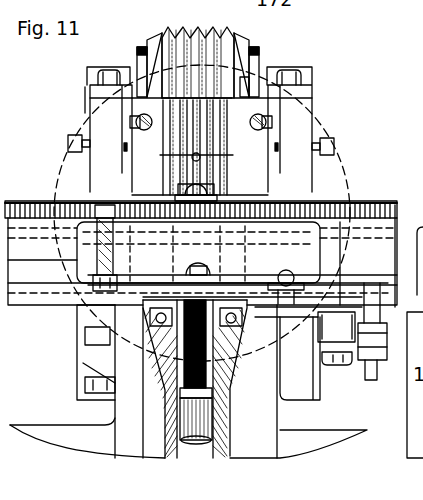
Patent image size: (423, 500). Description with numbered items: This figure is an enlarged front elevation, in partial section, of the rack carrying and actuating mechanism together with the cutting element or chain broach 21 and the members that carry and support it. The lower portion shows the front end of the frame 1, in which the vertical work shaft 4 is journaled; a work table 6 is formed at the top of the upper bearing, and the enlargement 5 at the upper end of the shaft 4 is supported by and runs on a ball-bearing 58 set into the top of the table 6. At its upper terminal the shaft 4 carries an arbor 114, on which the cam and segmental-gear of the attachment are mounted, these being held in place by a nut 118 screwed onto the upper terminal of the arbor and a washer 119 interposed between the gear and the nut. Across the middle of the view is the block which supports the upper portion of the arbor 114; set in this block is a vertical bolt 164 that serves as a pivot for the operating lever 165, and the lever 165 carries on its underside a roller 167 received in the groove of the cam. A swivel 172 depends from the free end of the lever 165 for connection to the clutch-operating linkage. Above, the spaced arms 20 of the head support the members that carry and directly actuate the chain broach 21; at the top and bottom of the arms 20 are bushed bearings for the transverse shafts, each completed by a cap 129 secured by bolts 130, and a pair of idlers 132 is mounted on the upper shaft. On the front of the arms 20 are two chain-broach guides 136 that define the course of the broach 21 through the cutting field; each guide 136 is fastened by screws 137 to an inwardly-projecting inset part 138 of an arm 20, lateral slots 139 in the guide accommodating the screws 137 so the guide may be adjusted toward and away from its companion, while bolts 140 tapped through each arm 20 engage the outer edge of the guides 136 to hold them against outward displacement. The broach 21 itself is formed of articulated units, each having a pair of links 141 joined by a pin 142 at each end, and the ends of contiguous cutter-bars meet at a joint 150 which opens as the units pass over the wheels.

The frame 1 is at (76, 435).
The work shaft 4 is at (200, 426).
The enlargement 5 is at (160, 348).
The work table 6 is at (90, 311).
The arms 20 is at (201, 198).
The chain broach 21 is at (198, 53).
The ball-bearing 58 is at (247, 352).
The arbor 114 is at (190, 372).
The nut 118 is at (205, 190).
The washer 119 is at (178, 155).
The cap 129 is at (120, 72).
The bolts 130 is at (110, 80).
The idlers 132 is at (143, 54).
The chain-broach guides 136 is at (199, 191).
The screws 137 is at (130, 118).
The inset part 138 is at (88, 170).
The lateral slots 139 is at (130, 122).
The bolts 140 is at (68, 144).
The links 141 is at (156, 62).
The pin 142 is at (258, 50).
The joint 150 is at (205, 157).
The bolt 164 is at (96, 245).
The operating lever 165 is at (236, 283).
The roller 167 is at (196, 285).
The swivel 172 is at (388, 335).